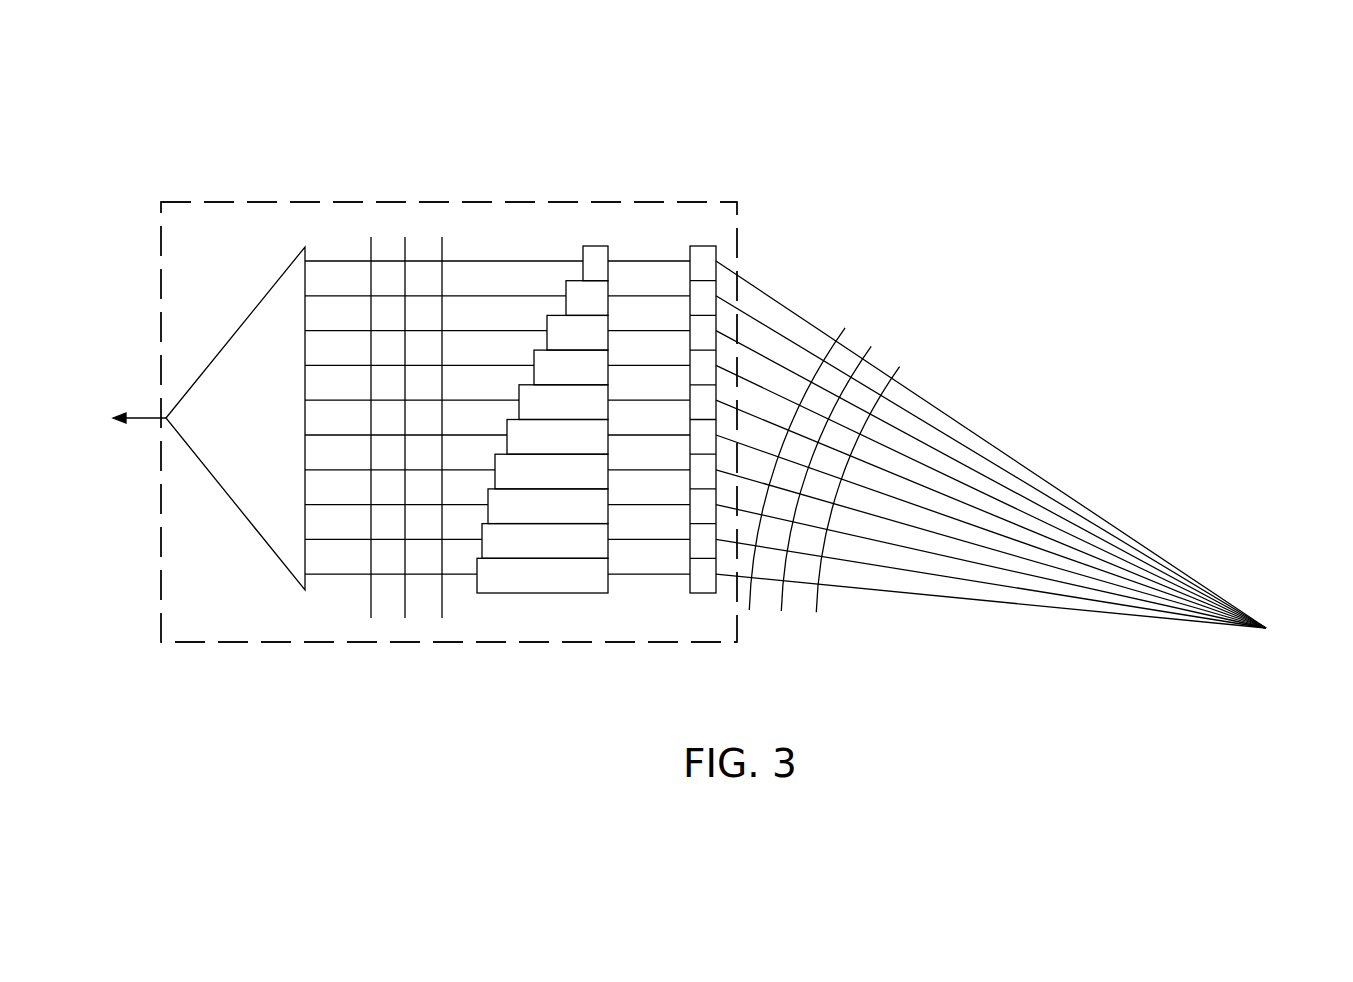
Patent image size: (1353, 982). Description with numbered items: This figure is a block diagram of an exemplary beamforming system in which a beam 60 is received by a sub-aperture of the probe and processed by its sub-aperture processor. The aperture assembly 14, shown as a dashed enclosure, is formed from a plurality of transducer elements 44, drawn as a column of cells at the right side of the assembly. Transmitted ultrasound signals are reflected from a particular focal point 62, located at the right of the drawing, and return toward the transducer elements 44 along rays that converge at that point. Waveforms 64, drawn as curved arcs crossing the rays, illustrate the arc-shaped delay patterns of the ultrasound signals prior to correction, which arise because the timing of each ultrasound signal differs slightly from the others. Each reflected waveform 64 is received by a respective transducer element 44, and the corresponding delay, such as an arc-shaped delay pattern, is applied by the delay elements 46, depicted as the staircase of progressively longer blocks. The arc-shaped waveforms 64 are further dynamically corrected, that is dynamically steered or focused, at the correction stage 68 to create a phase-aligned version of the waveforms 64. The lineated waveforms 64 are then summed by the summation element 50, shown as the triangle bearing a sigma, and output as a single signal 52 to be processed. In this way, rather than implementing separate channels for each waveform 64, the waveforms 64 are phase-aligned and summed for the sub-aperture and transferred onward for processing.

The beam 60 is at (735, 95).
The aperture assembly 14 is at (268, 201).
The summation element 50 is at (215, 357).
The single signal 52 is at (143, 413).
The correction stage 68 is at (414, 232).
The delay elements 46 is at (594, 245).
The transducer elements 44 is at (707, 245).
The focal point 62 is at (1266, 628).
The waveforms 64 is at (882, 348).